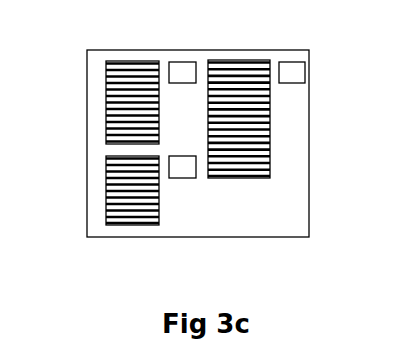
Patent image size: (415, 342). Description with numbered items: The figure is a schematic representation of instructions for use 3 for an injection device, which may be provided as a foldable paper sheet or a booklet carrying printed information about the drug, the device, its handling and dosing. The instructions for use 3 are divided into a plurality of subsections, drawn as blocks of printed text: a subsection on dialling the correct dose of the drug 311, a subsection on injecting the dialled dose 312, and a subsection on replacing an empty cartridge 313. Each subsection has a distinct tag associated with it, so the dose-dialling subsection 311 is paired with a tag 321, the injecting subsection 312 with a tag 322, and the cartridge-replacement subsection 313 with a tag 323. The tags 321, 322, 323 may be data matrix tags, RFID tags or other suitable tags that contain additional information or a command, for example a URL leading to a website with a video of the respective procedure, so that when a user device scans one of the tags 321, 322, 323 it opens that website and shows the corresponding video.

The instructions for use 3 is at (308, 50).
The subsection on dialling the correct dose of the drug 311 is at (106, 67).
The subsection on injecting the dialled dose 312 is at (106, 172).
The subsection on replacing an empty cartridge 313 is at (270, 154).
The tag 321 is at (178, 62).
The tag 322 is at (188, 178).
The tag 323 is at (305, 73).